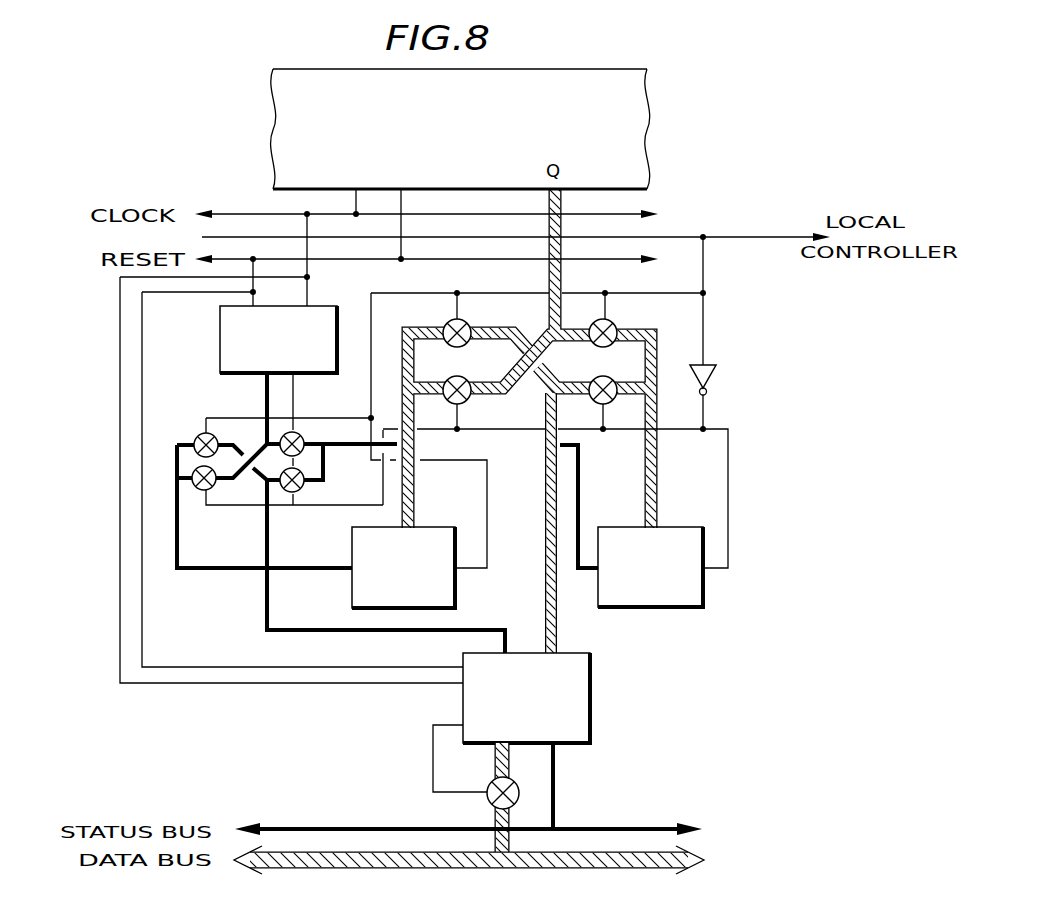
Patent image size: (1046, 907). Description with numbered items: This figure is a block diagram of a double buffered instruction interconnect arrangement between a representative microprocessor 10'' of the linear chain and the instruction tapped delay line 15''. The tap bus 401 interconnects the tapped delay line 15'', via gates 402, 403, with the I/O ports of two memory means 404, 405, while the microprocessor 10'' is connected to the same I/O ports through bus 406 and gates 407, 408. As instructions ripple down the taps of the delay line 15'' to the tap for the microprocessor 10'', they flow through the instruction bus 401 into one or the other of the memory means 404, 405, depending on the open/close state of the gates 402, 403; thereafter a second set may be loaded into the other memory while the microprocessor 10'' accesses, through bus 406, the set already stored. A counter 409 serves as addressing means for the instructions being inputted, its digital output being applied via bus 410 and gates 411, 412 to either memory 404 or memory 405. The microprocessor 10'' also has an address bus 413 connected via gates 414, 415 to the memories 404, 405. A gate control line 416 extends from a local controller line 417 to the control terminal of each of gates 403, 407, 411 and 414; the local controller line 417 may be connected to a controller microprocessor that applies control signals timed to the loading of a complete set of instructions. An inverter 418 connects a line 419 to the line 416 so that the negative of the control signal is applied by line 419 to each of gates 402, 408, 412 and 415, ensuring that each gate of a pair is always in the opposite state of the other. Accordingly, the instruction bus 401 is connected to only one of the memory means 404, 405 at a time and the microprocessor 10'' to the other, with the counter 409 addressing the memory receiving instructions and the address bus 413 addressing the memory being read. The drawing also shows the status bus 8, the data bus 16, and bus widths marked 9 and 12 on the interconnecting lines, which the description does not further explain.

The instruction tapped delay line 15'' is at (476, 106).
The local controller line 417 is at (667, 236).
The gate control line 416 is at (703, 272).
The tap bus 401 is at (564, 288).
The counter 409 is at (328, 304).
The gate 407 is at (448, 322).
The gate 402 is at (463, 367).
The gate 403 is at (613, 322).
The gate 408 is at (606, 380).
The bus 410 is at (262, 398).
The gate 414 is at (197, 435).
The gate 411 is at (303, 442).
The gate 415 is at (305, 488).
The gate 412 is at (196, 490).
The inverter 418 is at (717, 372).
The line 419 is at (723, 430).
The memory means 404 is at (456, 590).
The memory means 405 is at (683, 610).
The nine-bit bus 9 is at (593, 557).
The address bus 413 is at (262, 612).
The bus 406 is at (558, 637).
The twelve-bit bus 12 is at (548, 630).
The microprocessor 10'' is at (561, 741).
The status bus 8 is at (328, 840).
The data bus 16 is at (372, 845).